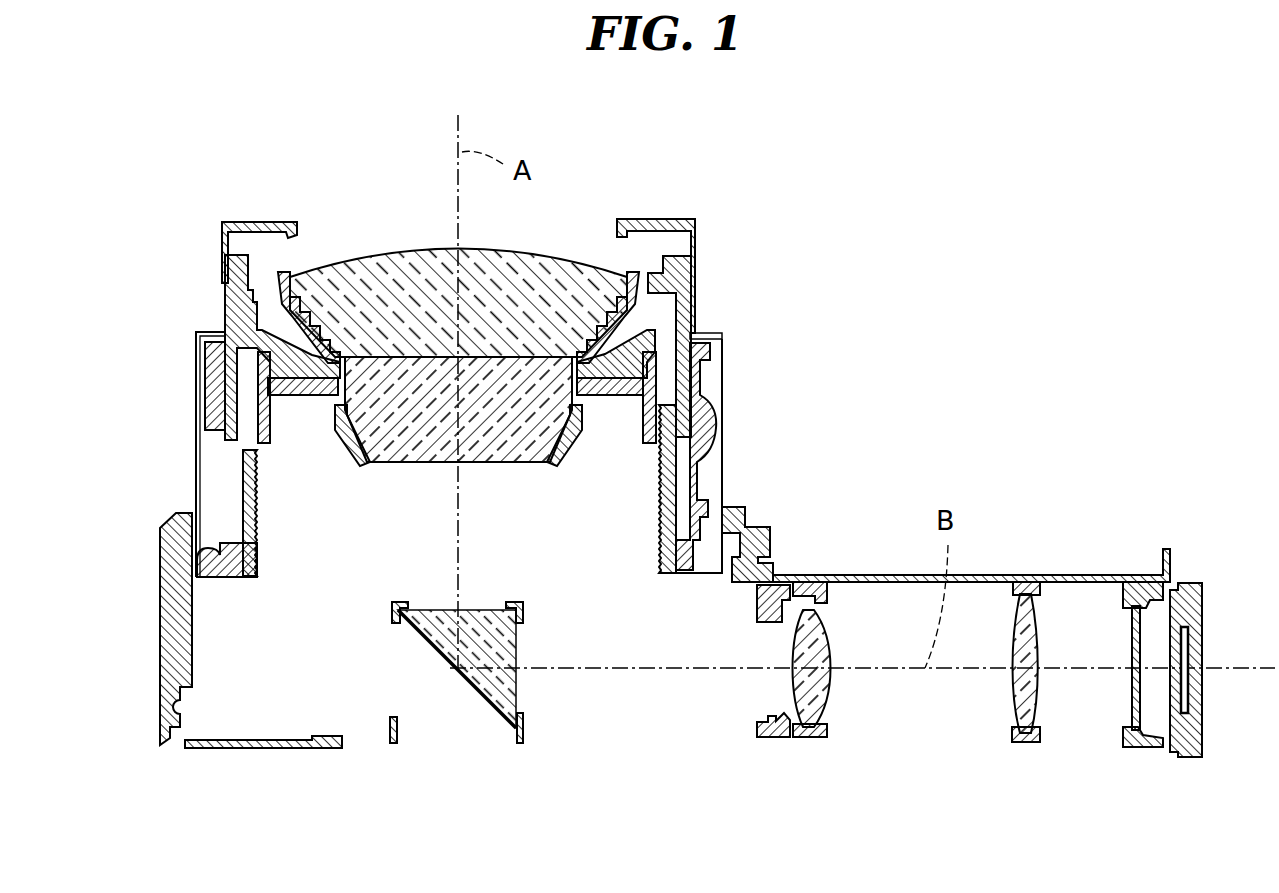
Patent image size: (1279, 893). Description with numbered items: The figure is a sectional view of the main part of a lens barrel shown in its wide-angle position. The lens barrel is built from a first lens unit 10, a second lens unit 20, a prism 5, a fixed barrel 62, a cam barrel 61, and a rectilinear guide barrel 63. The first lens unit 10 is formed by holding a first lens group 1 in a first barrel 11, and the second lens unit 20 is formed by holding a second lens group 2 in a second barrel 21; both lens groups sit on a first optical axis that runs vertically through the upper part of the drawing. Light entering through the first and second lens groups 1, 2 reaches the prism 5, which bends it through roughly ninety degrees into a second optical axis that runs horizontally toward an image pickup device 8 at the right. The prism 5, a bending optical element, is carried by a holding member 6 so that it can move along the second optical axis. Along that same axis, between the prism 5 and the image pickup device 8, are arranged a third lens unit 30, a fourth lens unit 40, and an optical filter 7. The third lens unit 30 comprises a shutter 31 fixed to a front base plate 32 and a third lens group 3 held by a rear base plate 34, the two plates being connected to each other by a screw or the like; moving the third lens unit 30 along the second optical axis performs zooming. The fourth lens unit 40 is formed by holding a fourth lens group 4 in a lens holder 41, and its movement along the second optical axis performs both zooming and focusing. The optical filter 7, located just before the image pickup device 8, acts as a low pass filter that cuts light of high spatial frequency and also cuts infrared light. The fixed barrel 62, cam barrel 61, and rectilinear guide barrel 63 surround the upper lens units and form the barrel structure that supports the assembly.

The first lens group 1 is at (388, 268).
The second lens group 2 is at (397, 442).
The third lens group 3 is at (818, 710).
The fourth lens group 4 is at (1032, 710).
The prism 5 is at (422, 627).
The holding member 6 is at (525, 735).
The optical filter 7 is at (1135, 710).
The image pickup device 8 is at (1198, 637).
The first lens unit 10 is at (168, 256).
The first barrel 11 is at (232, 306).
The second lens unit 20 is at (318, 450).
The second barrel 21 is at (343, 425).
The third lens unit 30 is at (835, 760).
The shutter 31 is at (783, 623).
The front base plate 32 is at (757, 607).
The rear base plate 34 is at (810, 740).
The fourth lens unit 40 is at (1044, 762).
The lens holder 41 is at (1020, 742).
The cam barrel 61 is at (712, 425).
The fixed barrel 62 is at (775, 545).
The rectilinear guide barrel 63 is at (697, 490).